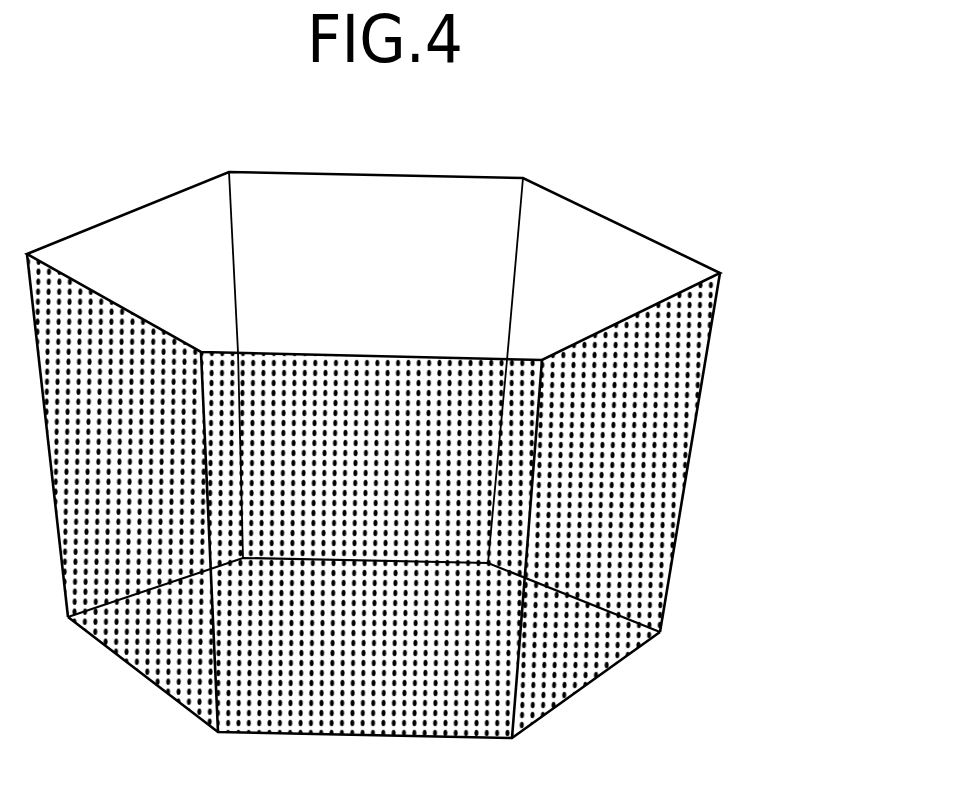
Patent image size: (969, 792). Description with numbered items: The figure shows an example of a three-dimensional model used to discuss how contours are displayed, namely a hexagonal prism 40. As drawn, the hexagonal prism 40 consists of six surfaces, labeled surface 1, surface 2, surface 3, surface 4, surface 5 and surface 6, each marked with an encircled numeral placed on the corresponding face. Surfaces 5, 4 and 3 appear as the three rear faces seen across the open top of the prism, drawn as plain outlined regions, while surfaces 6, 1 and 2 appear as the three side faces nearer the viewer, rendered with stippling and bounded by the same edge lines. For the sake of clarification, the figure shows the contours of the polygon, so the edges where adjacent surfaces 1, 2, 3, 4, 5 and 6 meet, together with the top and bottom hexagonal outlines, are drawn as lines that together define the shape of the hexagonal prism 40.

The surface 1 is at (371, 545).
The surface 2 is at (616, 505).
The surface 3 is at (613, 269).
The surface 4 is at (376, 266).
The surface 5 is at (132, 262).
The surface 6 is at (122, 493).
The hexagonal prism 40 is at (770, 498).